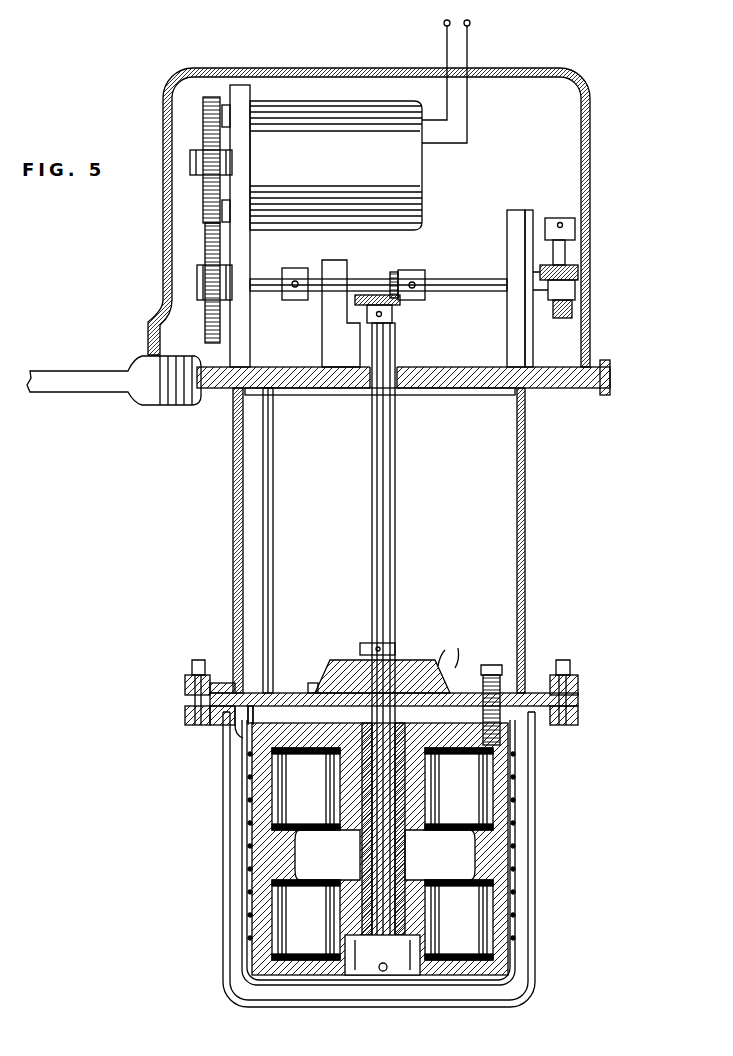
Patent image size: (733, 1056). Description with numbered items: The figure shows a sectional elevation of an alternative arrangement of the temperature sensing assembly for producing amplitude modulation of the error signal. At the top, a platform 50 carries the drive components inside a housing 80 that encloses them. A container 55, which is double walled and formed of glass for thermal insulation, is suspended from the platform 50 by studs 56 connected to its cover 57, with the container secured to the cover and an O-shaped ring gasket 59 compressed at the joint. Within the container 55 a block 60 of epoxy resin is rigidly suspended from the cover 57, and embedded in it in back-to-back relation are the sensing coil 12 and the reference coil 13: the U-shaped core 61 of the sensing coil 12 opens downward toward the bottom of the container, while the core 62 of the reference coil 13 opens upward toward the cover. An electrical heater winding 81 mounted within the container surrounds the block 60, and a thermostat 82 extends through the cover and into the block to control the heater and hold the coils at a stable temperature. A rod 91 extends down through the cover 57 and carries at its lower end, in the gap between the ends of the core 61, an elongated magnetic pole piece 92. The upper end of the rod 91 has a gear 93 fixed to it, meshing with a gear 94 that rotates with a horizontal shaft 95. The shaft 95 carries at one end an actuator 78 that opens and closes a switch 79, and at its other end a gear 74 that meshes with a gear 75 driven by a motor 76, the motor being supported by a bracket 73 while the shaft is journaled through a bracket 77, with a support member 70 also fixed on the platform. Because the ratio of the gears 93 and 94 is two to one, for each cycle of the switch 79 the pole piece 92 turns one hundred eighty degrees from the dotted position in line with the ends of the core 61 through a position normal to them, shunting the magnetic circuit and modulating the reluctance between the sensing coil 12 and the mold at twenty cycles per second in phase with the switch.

The sensing coil 12 is at (368, 918).
The reference coil 13 is at (368, 780).
The platform 50 is at (190, 403).
The container 55 is at (222, 898).
The studs 56 is at (270, 586).
The cover 57 is at (283, 690).
The O-shaped ring gasket 59 is at (228, 690).
The block 60 is at (282, 734).
The U-shaped core 61 is at (365, 925).
The U-shaped core 62 is at (352, 838).
The support member 70 is at (330, 335).
The support bracket 73 is at (246, 258).
The gear 74 is at (207, 242).
The gear 75 is at (204, 142).
The motor 76 is at (410, 189).
The bracket 77 is at (520, 346).
The actuator 78 is at (578, 262).
The switch 79 is at (572, 236).
The housing 80 is at (590, 156).
The electrical heater winding 81 is at (250, 843).
The thermostat 82 is at (395, 516).
The rod 91 is at (378, 527).
The pole piece 92 is at (398, 975).
The gear 93 is at (392, 305).
The gear 94 is at (410, 270).
The shaft 95 is at (470, 278).